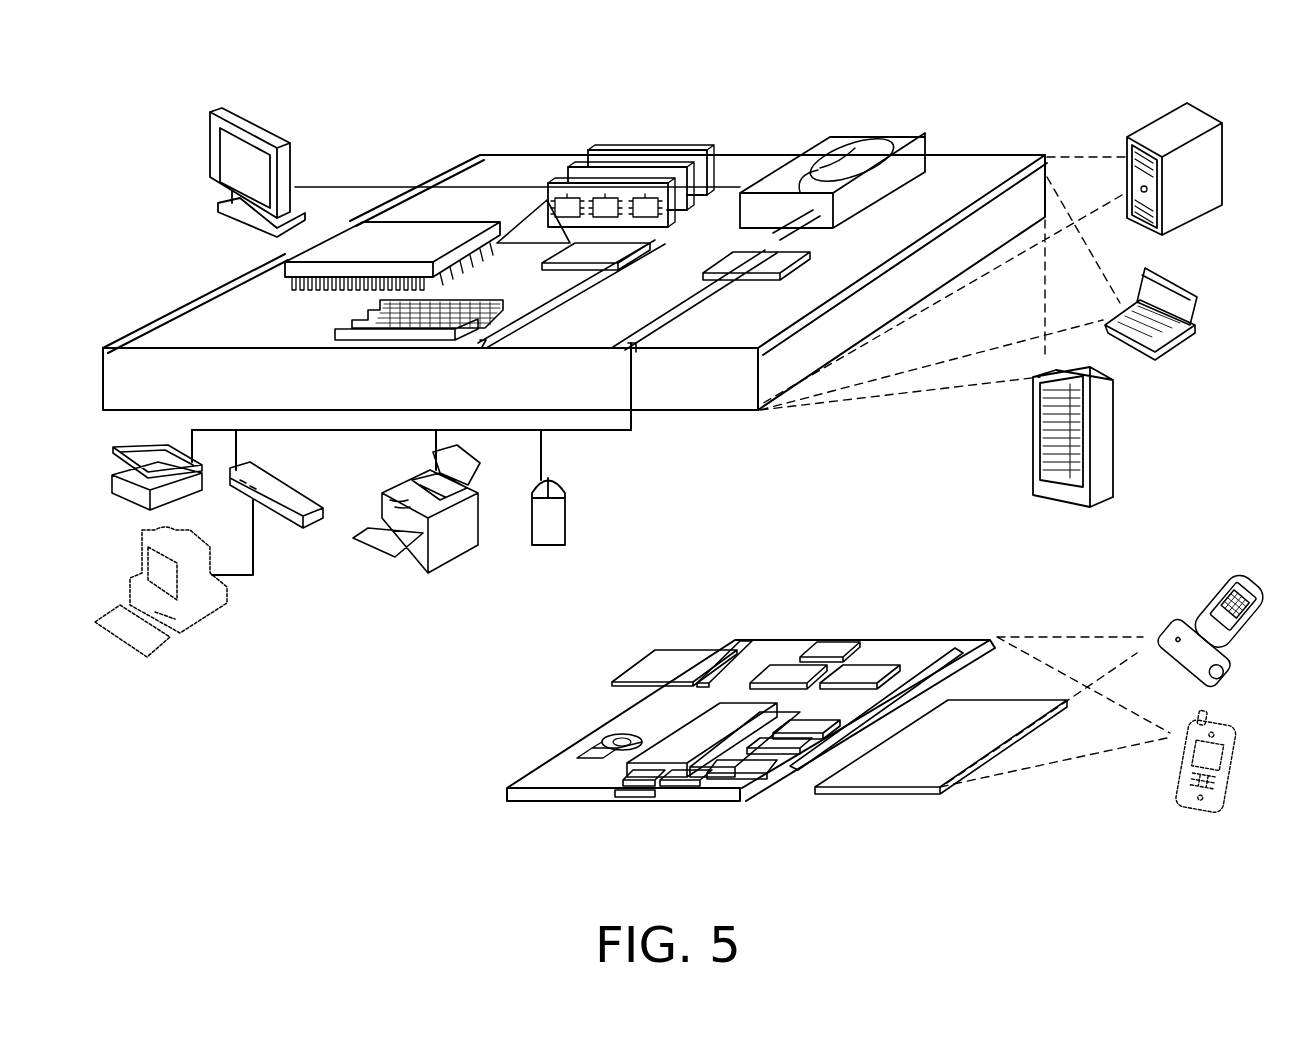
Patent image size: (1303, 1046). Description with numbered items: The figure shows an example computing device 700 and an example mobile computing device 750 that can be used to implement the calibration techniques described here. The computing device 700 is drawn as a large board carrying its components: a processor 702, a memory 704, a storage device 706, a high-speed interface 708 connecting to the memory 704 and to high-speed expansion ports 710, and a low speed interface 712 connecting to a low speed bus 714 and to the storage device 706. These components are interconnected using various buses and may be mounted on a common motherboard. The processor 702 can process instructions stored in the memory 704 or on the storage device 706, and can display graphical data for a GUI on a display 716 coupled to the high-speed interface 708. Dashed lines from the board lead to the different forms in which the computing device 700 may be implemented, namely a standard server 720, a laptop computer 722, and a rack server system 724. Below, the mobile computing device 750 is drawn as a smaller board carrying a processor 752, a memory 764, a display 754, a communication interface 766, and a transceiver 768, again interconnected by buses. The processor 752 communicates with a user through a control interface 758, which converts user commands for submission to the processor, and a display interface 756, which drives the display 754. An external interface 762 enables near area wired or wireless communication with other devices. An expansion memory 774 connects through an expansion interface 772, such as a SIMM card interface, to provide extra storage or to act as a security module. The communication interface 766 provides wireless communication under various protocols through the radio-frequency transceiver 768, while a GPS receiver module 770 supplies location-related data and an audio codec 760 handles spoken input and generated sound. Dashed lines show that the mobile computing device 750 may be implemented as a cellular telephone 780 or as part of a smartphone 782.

The computing device 700 is at (382, 78).
The processor 702 is at (286, 278).
The memory 704 is at (609, 150).
The storage device 706 is at (830, 145).
The high-speed interface 708 is at (557, 260).
The high-speed expansion ports 710 is at (352, 320).
The low speed interface 712 is at (747, 255).
The low speed bus 714 is at (636, 352).
The display 716 is at (208, 118).
The standard server 720 is at (1127, 145).
The laptop computer 722 is at (1147, 277).
The rack server system 724 is at (1034, 467).
The mobile computing device 750 is at (714, 613).
The processor 752 is at (672, 795).
The display 754 is at (940, 794).
The display interface 756 is at (748, 793).
The control interface 758 is at (788, 770).
The audio codec 760 is at (807, 763).
The external interface 762 is at (640, 800).
The memory 764 is at (596, 756).
The communication interface 766 is at (789, 658).
The transceiver 768 is at (856, 650).
The GPS receiver module 770 is at (837, 654).
The expansion interface 772 is at (719, 652).
The expansion memory 774 is at (657, 658).
The cellular telephone 780 is at (1200, 588).
The smartphone 782 is at (1186, 718).